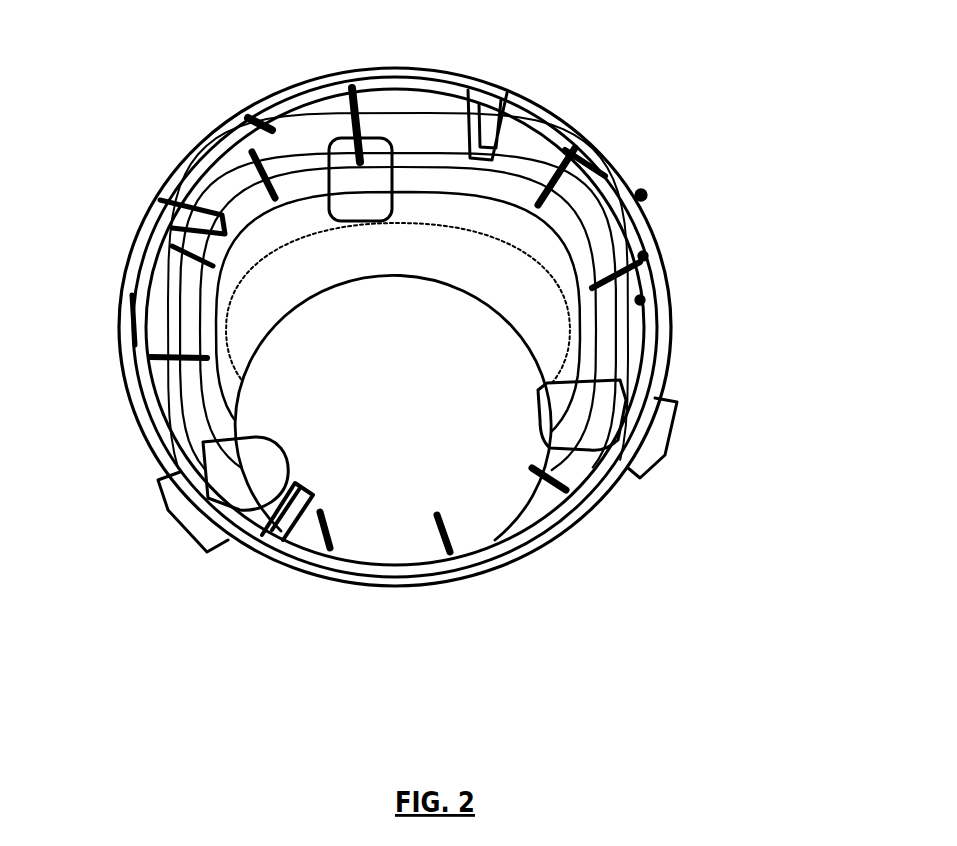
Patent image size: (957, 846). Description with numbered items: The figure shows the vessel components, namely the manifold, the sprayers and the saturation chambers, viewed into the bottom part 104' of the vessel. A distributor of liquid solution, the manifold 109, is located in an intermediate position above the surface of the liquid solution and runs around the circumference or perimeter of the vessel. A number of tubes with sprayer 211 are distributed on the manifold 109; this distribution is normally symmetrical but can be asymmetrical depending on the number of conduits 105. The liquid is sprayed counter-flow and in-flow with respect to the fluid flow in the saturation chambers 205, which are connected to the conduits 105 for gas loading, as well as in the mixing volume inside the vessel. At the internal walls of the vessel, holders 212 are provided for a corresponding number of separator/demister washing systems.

The manifold 109 is at (453, 73).
The bottom part 104' is at (472, 326).
The saturation chamber 205 is at (350, 185).
The tube with sprayer 211 is at (358, 100).
The holder 212 is at (500, 112).
The conduit 105 is at (675, 437).